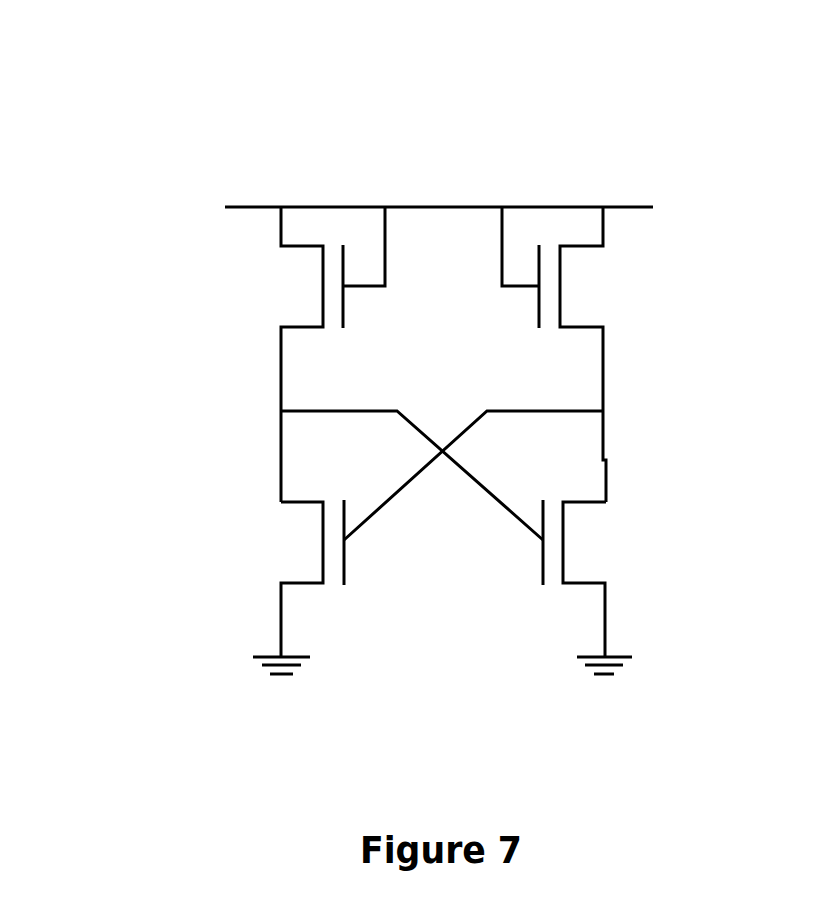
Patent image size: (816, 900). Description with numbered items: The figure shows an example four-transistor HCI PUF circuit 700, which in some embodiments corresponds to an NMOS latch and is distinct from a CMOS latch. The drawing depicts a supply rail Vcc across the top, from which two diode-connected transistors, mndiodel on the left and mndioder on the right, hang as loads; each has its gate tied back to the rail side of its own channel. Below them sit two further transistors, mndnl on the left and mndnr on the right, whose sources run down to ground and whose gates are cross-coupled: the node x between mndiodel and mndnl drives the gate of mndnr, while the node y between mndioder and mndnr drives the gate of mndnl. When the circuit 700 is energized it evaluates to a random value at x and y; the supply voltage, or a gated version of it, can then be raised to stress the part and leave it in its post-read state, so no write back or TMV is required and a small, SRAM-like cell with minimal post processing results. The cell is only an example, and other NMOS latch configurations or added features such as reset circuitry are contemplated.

The 4-transistor HCI PUF circuit 700 is at (84, 97).
The supply voltage rail Vcc is at (409, 188).
The left diode-connected NMOS transistor mndiodel is at (271, 309).
The right diode-connected NMOS transistor mndioder is at (615, 309).
The left cross-coupled NMOS transistor mndnl is at (276, 587).
The right cross-coupled NMOS transistor mndnr is at (602, 587).
The left output node x is at (388, 475).
The right output node y is at (492, 475).